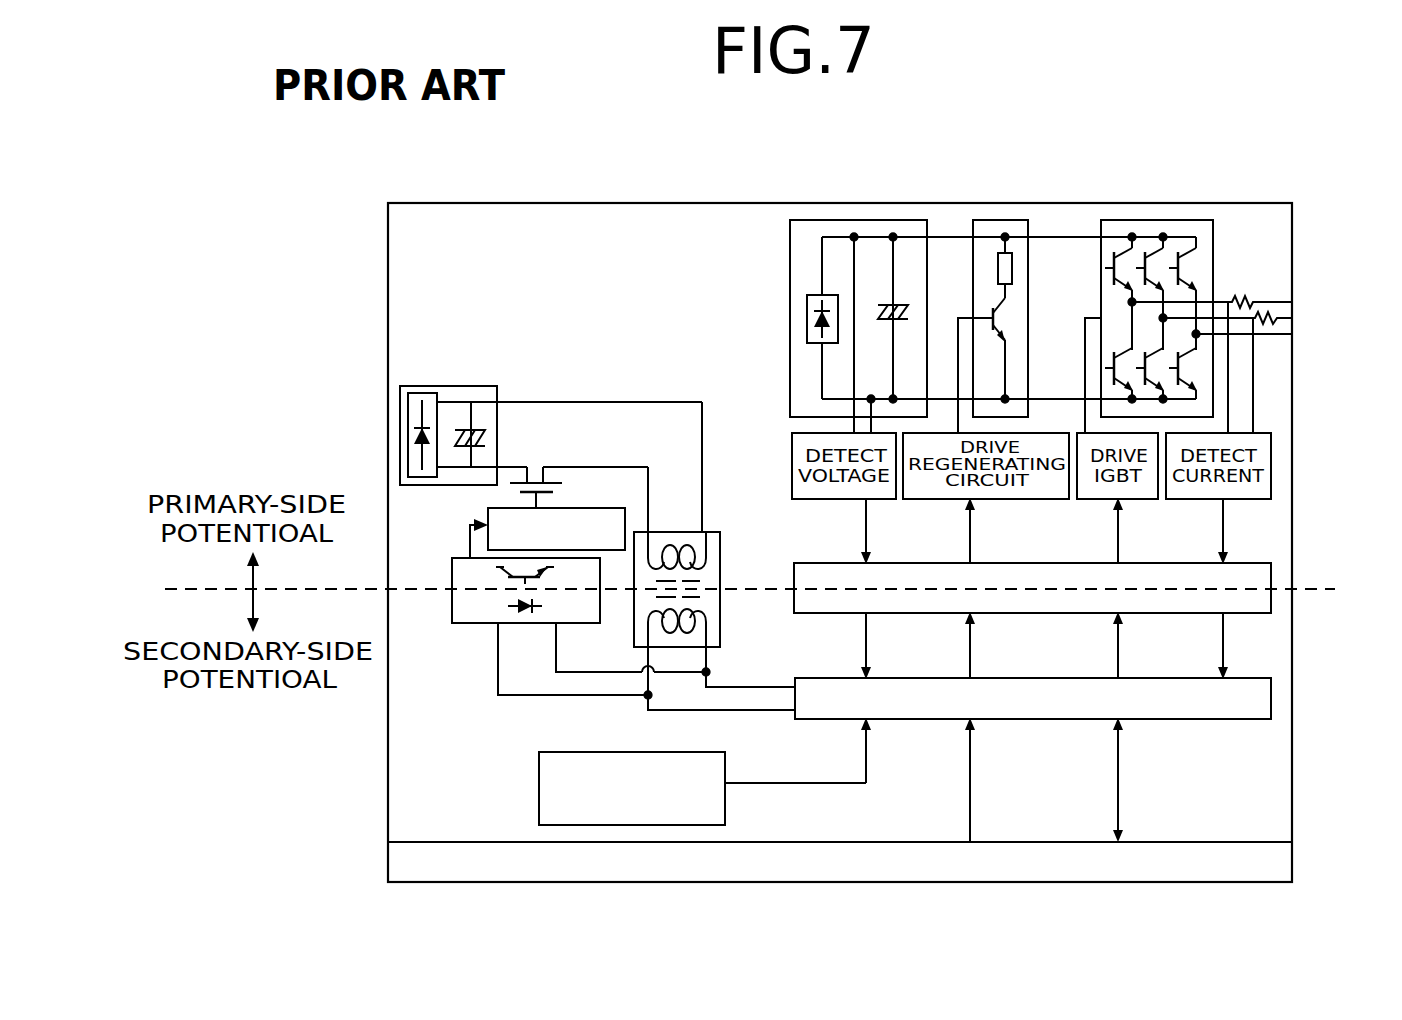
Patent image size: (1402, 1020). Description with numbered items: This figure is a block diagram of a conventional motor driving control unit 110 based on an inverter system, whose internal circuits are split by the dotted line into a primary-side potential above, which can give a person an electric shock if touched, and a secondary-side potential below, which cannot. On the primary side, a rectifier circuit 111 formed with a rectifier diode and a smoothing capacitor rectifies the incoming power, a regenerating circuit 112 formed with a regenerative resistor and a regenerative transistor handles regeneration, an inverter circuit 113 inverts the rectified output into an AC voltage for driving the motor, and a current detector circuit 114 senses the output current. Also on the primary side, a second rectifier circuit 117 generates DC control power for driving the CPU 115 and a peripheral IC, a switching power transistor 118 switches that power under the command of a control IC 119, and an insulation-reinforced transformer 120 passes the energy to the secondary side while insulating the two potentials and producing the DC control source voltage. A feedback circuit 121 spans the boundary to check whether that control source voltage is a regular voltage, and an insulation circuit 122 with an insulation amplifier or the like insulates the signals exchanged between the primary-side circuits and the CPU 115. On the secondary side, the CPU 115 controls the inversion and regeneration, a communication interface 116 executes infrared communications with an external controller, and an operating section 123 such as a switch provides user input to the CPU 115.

The motor driving control unit 110 is at (840, 512).
The rectifier circuit 111 is at (869, 220).
The regenerating circuit 112 is at (1005, 220).
The inverter circuit 113 is at (1197, 220).
The current detector circuit 114 is at (1246, 296).
The CPU 115 is at (1272, 704).
The communication interface 116 is at (1292, 870).
The rectifier circuit 117 is at (455, 386).
The switching power transistor 118 is at (539, 467).
The control IC 119 is at (594, 508).
The insulation-reinforced transformer 120 is at (716, 532).
The feedback circuit 121 is at (466, 623).
The insulation circuit 122 is at (1272, 572).
The operating section 123 is at (585, 752).